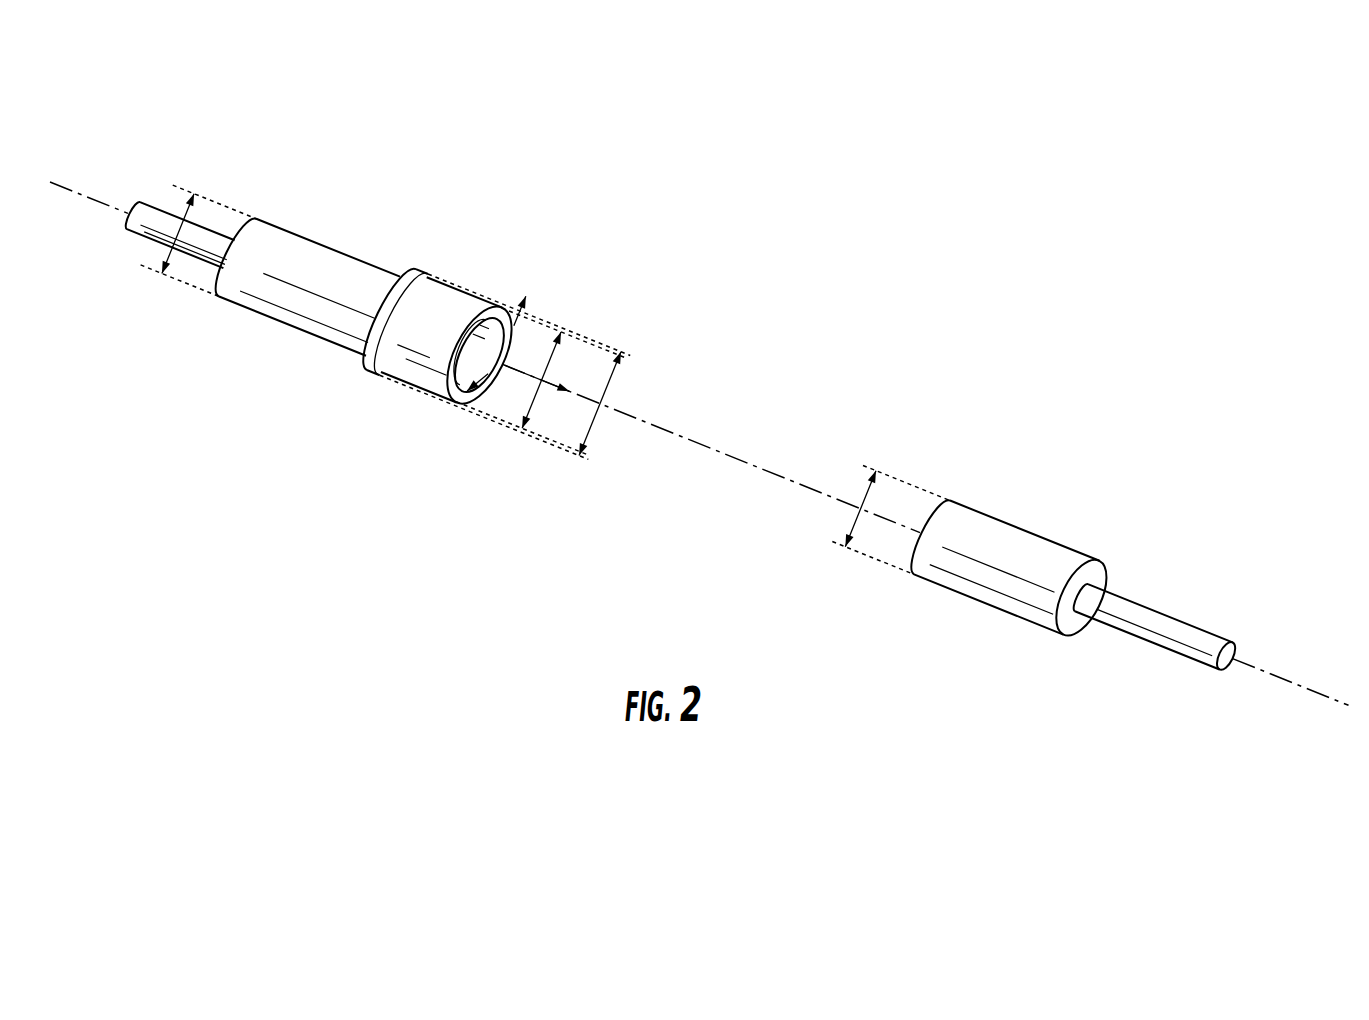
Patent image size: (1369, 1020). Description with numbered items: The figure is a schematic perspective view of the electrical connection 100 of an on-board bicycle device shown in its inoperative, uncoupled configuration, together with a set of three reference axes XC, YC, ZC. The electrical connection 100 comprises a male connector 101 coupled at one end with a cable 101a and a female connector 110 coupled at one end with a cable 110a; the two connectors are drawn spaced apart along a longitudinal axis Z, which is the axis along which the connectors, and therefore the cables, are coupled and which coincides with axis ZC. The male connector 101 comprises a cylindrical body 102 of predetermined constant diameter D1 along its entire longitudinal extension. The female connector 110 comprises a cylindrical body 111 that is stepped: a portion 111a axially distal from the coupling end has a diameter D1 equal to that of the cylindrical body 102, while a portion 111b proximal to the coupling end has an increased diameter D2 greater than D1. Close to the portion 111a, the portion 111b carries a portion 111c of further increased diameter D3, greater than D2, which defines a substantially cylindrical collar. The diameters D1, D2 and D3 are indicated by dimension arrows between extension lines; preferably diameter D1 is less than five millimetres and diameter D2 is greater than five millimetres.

The electrical connection 100 is at (872, 226).
The female connector 110 is at (393, 186).
The cable 110a is at (157, 216).
The cylindrical body 111 is at (397, 262).
The portion 111a is at (300, 250).
The portion 111b is at (455, 300).
The portion 111c is at (422, 278).
The male connector 101 is at (1044, 512).
The cable 101a is at (1145, 627).
The cylindrical body 102 is at (957, 585).
The diameter D1 is at (177, 262).
The increased diameter D2 is at (526, 413).
The further increased diameter D3 is at (590, 420).
The reference axis XC is at (510, 298).
The reference axis YC is at (474, 371).
The reference axis ZC is at (537, 393).
The longitudinal axis Z is at (50, 183).